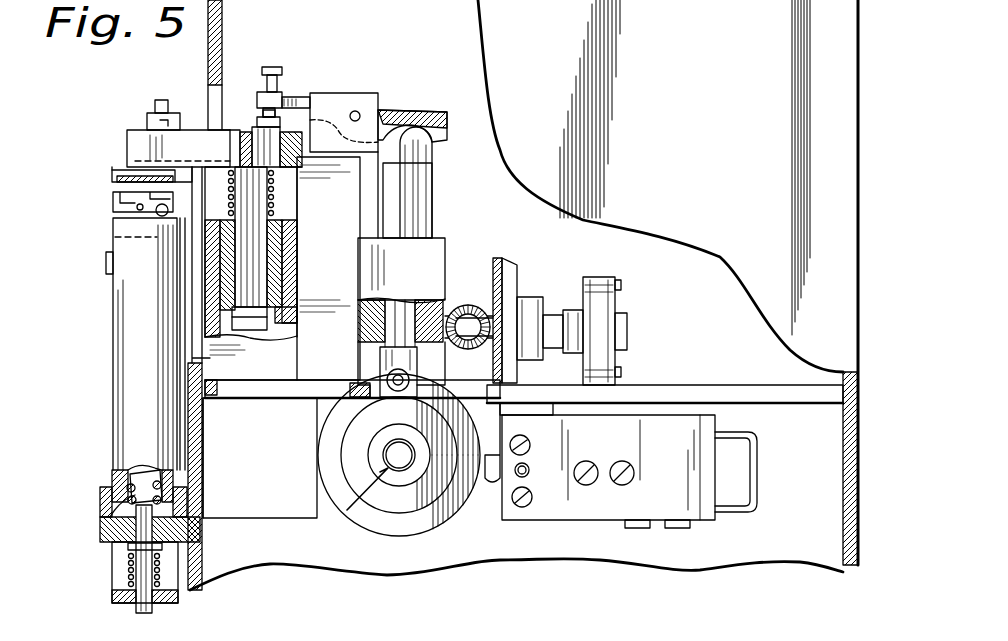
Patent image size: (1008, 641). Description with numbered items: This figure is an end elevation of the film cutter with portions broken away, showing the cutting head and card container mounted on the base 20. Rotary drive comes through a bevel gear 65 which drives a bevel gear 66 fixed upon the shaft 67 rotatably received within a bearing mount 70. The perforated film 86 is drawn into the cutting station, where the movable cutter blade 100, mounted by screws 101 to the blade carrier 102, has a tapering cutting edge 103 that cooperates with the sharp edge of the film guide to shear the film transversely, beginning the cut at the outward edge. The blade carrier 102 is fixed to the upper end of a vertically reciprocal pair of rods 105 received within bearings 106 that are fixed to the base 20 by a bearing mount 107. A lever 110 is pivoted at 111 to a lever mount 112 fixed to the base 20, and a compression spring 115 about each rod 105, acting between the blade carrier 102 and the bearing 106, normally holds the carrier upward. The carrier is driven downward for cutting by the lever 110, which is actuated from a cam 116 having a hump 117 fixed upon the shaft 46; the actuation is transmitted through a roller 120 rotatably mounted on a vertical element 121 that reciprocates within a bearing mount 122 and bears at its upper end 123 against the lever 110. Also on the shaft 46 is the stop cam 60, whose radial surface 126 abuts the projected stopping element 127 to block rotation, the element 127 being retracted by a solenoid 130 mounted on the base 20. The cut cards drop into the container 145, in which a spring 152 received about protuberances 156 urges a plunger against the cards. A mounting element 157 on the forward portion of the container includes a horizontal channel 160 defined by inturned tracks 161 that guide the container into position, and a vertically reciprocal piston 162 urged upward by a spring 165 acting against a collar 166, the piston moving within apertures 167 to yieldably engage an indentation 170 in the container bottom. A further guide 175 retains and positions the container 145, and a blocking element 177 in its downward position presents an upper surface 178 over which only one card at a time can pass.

The base 20 is at (692, 392).
The shaft 46 is at (365, 491).
The stop cam 60 is at (428, 530).
The bevel gear 65 is at (462, 318).
The bevel gear 66 is at (508, 279).
The shaft 67 is at (398, 269).
The bearing mount 70 is at (598, 288).
The film 86 is at (132, 191).
The movable cutter blade 100 is at (112, 165).
The screws 101 is at (165, 124).
The blade carrier 102 is at (132, 148).
The tapering cutting edge 103 is at (167, 180).
The rods 105 is at (262, 297).
The bearings 106 is at (296, 253).
The bearing mount 107 is at (262, 342).
The lever 110 is at (292, 97).
The pivot 111 is at (360, 115).
The lever mount 112 is at (333, 110).
The compression spring 115 is at (276, 193).
The cam 116 is at (395, 503).
The hump 117 is at (405, 389).
The roller 120 is at (388, 402).
The vertical element 121 is at (412, 197).
The bearing mount 122 is at (448, 246).
The upper end 123 is at (448, 140).
The surface 126 is at (498, 416).
The stopping element 127 is at (492, 482).
The solenoid 130 is at (701, 520).
The container 145 is at (126, 342).
The spring 152 is at (156, 470).
The protuberances 156 is at (132, 472).
The mounting element 157 is at (96, 557).
The channel 160 is at (100, 510).
The tracks 161 is at (105, 495).
The piston 162 is at (138, 608).
The spring 165 is at (128, 568).
The collar 166 is at (162, 546).
The apertures 167 is at (158, 608).
The indentation 170 is at (100, 536).
The guide 175 is at (105, 268).
The blocking element 177 is at (142, 206).
The upper surface 178 is at (123, 212).